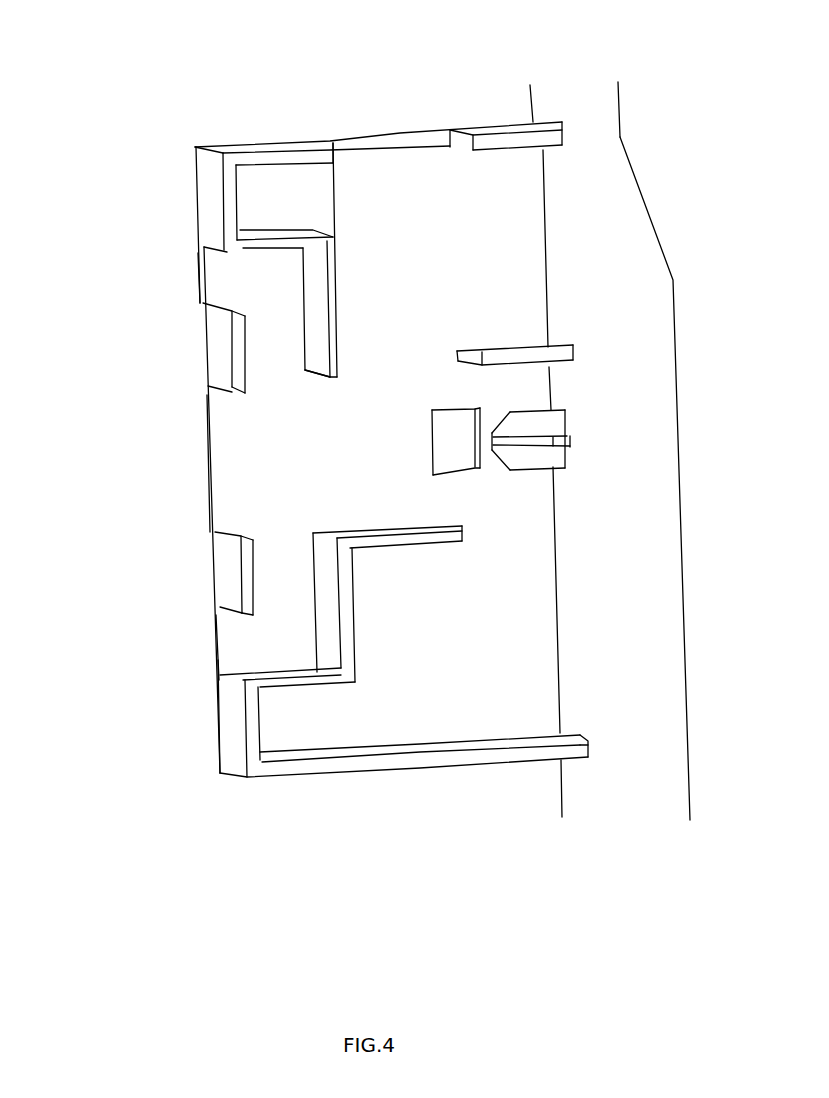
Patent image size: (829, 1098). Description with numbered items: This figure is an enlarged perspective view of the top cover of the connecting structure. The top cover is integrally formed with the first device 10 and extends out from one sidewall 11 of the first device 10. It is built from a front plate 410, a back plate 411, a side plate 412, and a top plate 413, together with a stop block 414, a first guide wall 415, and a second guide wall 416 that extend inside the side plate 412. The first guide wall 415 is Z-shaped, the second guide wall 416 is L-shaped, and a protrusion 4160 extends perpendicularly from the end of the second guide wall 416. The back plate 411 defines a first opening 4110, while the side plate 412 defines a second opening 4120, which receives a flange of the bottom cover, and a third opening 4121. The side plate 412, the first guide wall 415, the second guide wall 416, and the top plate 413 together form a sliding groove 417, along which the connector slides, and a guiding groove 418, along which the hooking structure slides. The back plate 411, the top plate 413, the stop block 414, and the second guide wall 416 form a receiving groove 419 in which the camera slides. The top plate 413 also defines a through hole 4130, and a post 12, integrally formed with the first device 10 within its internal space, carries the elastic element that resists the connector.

The first device 10 is at (620, 137).
The sidewall 11 is at (585, 238).
The post 12 is at (567, 437).
The front plate 410 is at (485, 760).
The back plate 411 is at (494, 125).
The first opening 4110 is at (334, 145).
The side plate 412 is at (203, 202).
The second opening 4120 is at (218, 276).
The third opening 4121 is at (215, 438).
The top plate 413 is at (505, 538).
The through hole 4130 is at (457, 470).
The stop block 414 is at (482, 353).
The first guide wall 415 is at (324, 675).
The second guide wall 416 is at (287, 243).
The protrusion 4160 is at (347, 364).
The sliding groove 417 is at (290, 462).
The guiding groove 418 is at (283, 328).
The receiving groove 419 is at (420, 200).